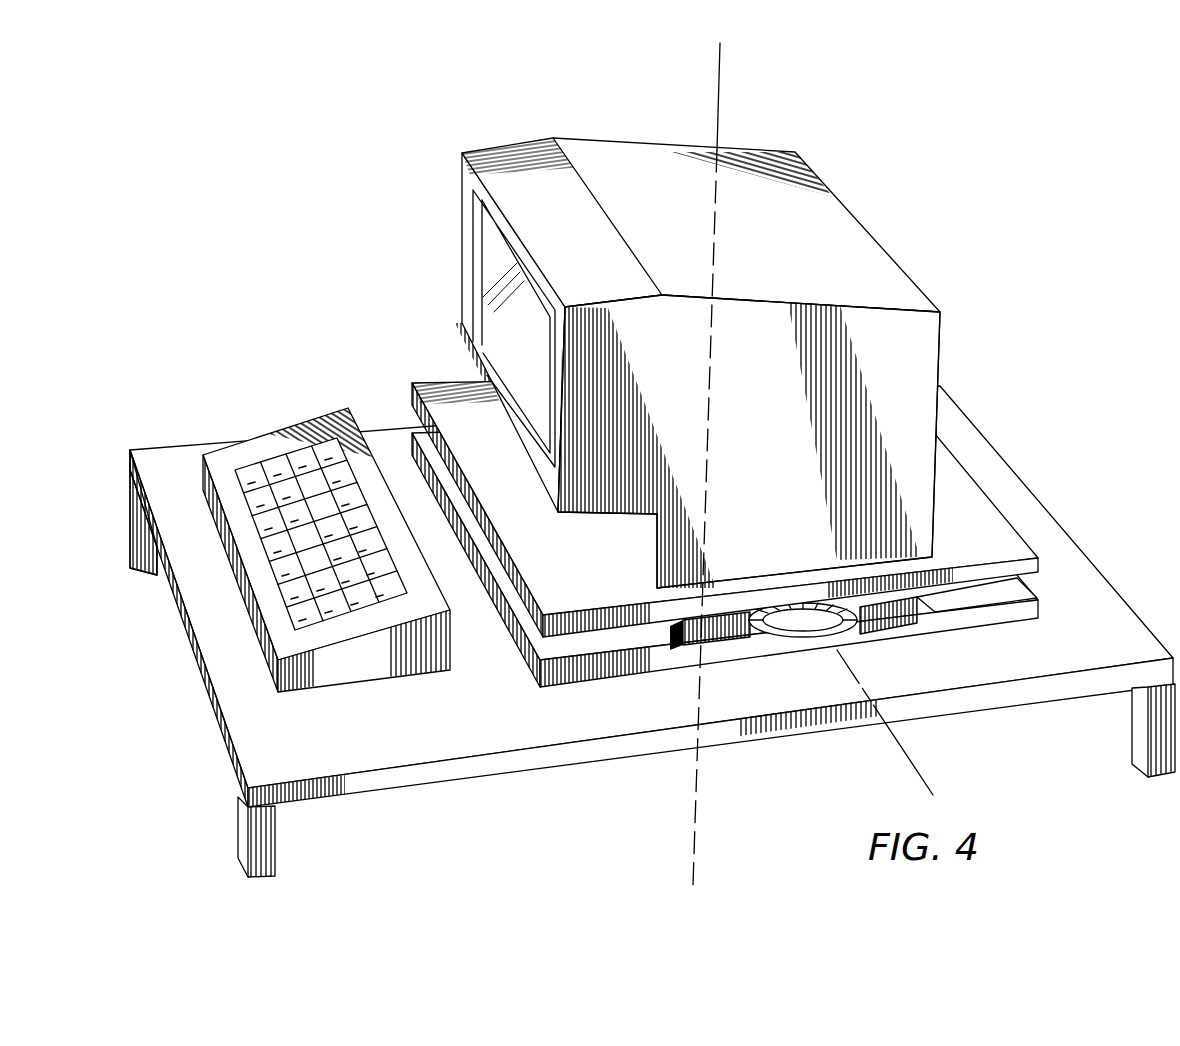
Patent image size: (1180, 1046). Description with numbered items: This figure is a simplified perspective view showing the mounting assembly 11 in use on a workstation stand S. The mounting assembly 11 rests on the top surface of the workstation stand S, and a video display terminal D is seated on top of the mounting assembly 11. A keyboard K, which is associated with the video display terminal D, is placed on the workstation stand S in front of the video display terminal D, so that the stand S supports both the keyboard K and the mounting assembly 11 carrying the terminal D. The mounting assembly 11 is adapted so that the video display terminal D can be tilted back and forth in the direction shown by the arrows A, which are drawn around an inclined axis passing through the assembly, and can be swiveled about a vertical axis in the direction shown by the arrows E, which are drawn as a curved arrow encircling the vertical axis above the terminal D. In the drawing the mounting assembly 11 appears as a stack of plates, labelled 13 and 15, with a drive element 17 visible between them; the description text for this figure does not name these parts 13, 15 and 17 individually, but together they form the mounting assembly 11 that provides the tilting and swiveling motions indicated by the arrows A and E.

The workstation stand S is at (437, 777).
The keyboard K is at (338, 670).
The mounting assembly 11 is at (709, 523).
The upper rotatable plate 13 is at (515, 578).
The lower base plate 15 is at (638, 667).
The gear drive 17 is at (730, 632).
The video display terminal D is at (875, 250).
The arrows E is at (737, 123).
The arrows A is at (873, 789).